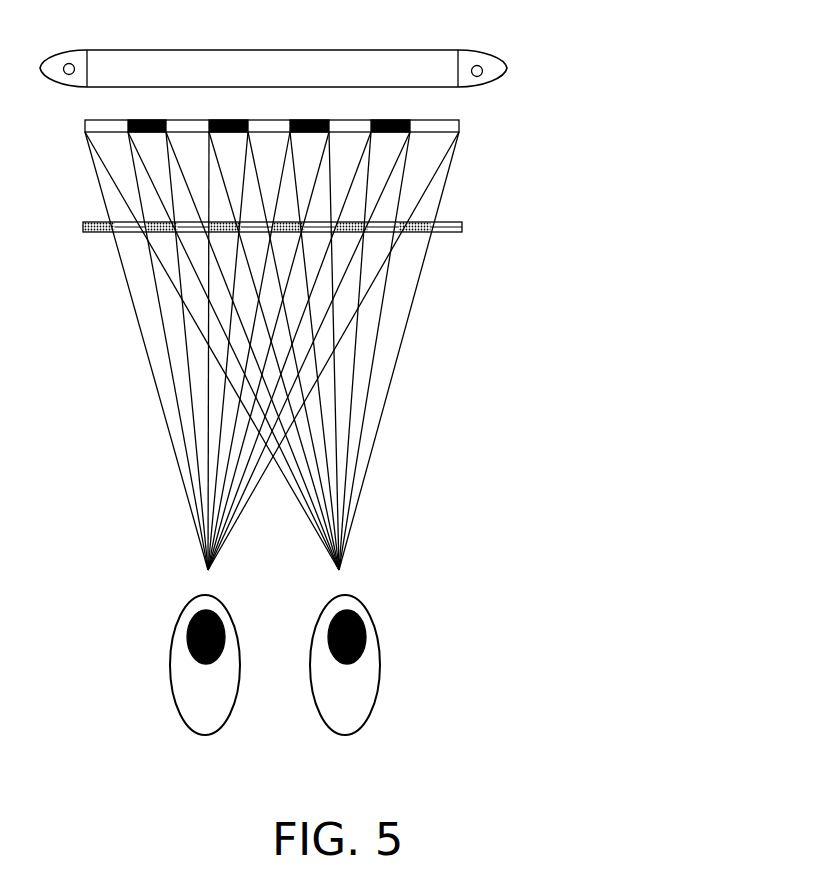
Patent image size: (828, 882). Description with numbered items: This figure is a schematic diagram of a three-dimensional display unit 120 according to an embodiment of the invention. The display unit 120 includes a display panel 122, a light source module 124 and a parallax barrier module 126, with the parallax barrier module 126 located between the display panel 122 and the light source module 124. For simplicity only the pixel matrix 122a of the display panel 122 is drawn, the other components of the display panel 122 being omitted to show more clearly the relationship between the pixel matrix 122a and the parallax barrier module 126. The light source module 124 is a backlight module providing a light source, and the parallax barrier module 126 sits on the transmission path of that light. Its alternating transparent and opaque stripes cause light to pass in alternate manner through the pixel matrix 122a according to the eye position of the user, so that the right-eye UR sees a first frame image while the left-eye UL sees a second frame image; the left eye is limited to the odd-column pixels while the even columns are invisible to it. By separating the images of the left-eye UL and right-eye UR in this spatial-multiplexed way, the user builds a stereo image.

The 3-D display unit 120 is at (657, 93).
The light source module 124 is at (502, 72).
The parallax barrier module 126 is at (453, 127).
The pixel matrix 122a is at (462, 228).
The display panel 122 is at (272, 227).
The left-eye UL is at (170, 666).
The right-eye UR is at (380, 666).